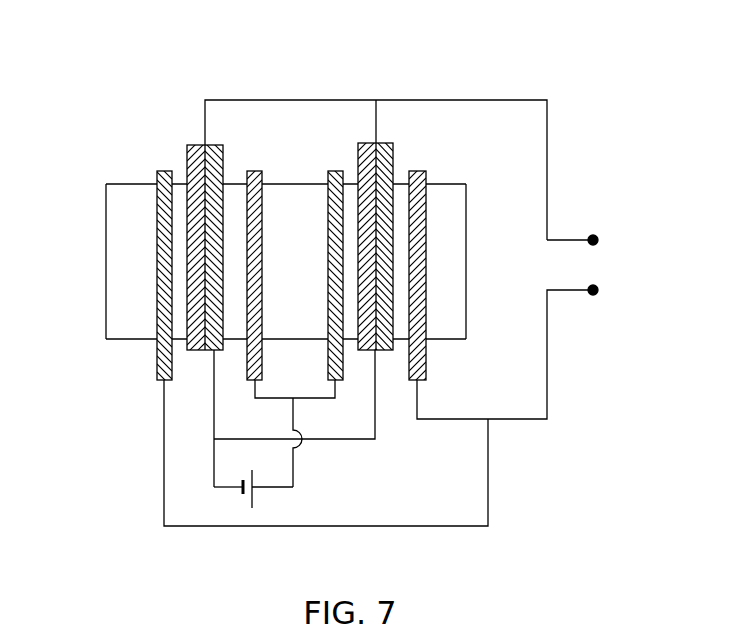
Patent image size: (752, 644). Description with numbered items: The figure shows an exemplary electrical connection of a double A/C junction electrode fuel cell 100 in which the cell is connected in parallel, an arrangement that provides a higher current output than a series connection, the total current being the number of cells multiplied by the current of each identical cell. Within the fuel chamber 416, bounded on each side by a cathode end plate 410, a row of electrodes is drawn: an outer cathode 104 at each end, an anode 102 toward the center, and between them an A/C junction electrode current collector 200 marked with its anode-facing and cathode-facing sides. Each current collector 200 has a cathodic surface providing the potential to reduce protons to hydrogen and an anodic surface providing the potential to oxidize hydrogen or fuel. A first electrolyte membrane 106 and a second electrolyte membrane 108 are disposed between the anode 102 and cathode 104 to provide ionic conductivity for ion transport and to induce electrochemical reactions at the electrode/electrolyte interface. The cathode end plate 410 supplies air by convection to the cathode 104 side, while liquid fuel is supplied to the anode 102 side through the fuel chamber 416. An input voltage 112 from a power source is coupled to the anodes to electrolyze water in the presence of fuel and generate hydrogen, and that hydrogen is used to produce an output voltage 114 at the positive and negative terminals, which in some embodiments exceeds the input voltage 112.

The fuel cell 100 is at (536, 74).
The anode 102 is at (262, 358).
The cathode 104 is at (163, 170).
The first electrolyte membrane 106 is at (352, 183).
The second electrolyte membrane 108 is at (182, 342).
The input voltage 112 is at (268, 498).
The output voltage 114 is at (612, 310).
The A/C junction electrode current collector 200 is at (222, 163).
The cathode end plate 410 is at (105, 249).
The fuel chamber 416 is at (285, 183).